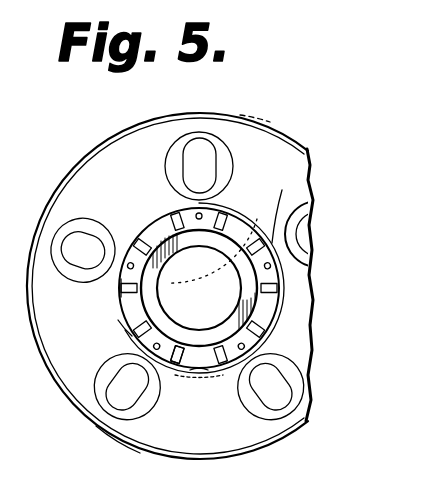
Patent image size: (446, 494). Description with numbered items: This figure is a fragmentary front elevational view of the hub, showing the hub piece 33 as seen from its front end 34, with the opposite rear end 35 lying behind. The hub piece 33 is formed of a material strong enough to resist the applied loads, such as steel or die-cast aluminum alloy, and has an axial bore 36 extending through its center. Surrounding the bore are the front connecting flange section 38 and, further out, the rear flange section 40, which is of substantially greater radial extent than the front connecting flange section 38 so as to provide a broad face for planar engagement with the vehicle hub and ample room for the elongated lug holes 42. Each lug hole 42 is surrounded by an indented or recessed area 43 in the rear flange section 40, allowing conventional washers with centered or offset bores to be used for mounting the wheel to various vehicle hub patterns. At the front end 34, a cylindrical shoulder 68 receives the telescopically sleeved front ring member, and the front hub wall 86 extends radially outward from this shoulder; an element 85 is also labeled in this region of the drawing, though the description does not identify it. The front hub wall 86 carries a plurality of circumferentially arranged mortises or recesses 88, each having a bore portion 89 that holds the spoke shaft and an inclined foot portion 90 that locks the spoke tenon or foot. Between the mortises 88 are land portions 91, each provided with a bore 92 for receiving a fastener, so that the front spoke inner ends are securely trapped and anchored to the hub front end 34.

The hub piece 33 is at (246, 177).
The front end 34 is at (182, 374).
The rear end 35 is at (97, 426).
The axial bore 36 is at (165, 258).
The front connecting flange section 38 is at (140, 234).
The rear flange section 40 is at (138, 138).
The elongated lug holes 42 is at (86, 266).
The indented or recessed areas 43 is at (97, 208).
The cylindrical shoulder 68 is at (123, 309).
The inner race 85 is at (160, 318).
The front hub wall 86 is at (208, 360).
The mortises or recesses 88 is at (280, 205).
The bore portions 89 is at (132, 334).
The inclined foot portions 90 is at (177, 350).
The land portions 91 is at (155, 228).
The bores 92 is at (205, 214).